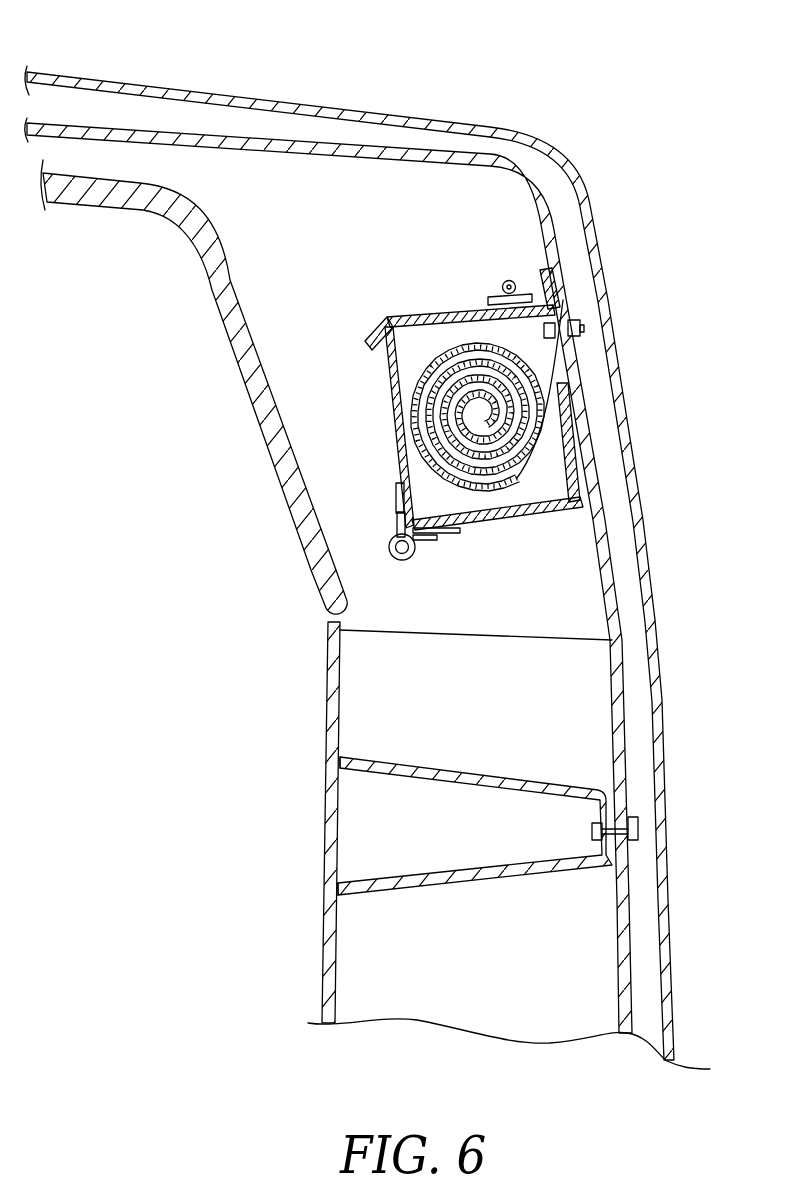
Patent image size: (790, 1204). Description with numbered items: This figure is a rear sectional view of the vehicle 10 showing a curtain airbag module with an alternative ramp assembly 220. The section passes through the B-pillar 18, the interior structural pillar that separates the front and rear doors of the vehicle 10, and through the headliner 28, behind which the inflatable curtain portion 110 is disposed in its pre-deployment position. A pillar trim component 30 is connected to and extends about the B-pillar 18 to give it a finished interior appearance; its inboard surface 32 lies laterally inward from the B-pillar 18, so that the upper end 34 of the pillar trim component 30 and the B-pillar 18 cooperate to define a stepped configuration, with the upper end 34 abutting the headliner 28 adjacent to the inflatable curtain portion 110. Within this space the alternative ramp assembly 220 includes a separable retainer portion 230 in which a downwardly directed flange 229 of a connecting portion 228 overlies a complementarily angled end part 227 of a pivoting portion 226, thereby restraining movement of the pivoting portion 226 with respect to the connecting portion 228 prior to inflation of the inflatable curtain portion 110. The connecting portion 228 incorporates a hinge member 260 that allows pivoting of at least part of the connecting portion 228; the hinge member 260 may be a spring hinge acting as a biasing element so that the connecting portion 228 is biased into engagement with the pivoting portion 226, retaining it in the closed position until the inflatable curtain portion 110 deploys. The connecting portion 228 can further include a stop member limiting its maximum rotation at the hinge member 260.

The vehicle 10 is at (606, 73).
The B-pillar 18 is at (660, 685).
The headliner 28 is at (237, 347).
The pillar trim component 30 is at (311, 765).
The inboard surface 32 is at (325, 840).
The upper end 34 is at (548, 638).
The inflatable curtain portion 110 is at (515, 327).
The alternative ramp assembly 220 is at (462, 389).
The pivoting portion 226 is at (397, 440).
The angled end part 227 is at (383, 365).
The connecting portion 228 is at (436, 296).
The downwardly directed flange 229 is at (372, 340).
The separable retainer portion 230 is at (392, 278).
The hinge member 260 is at (509, 280).